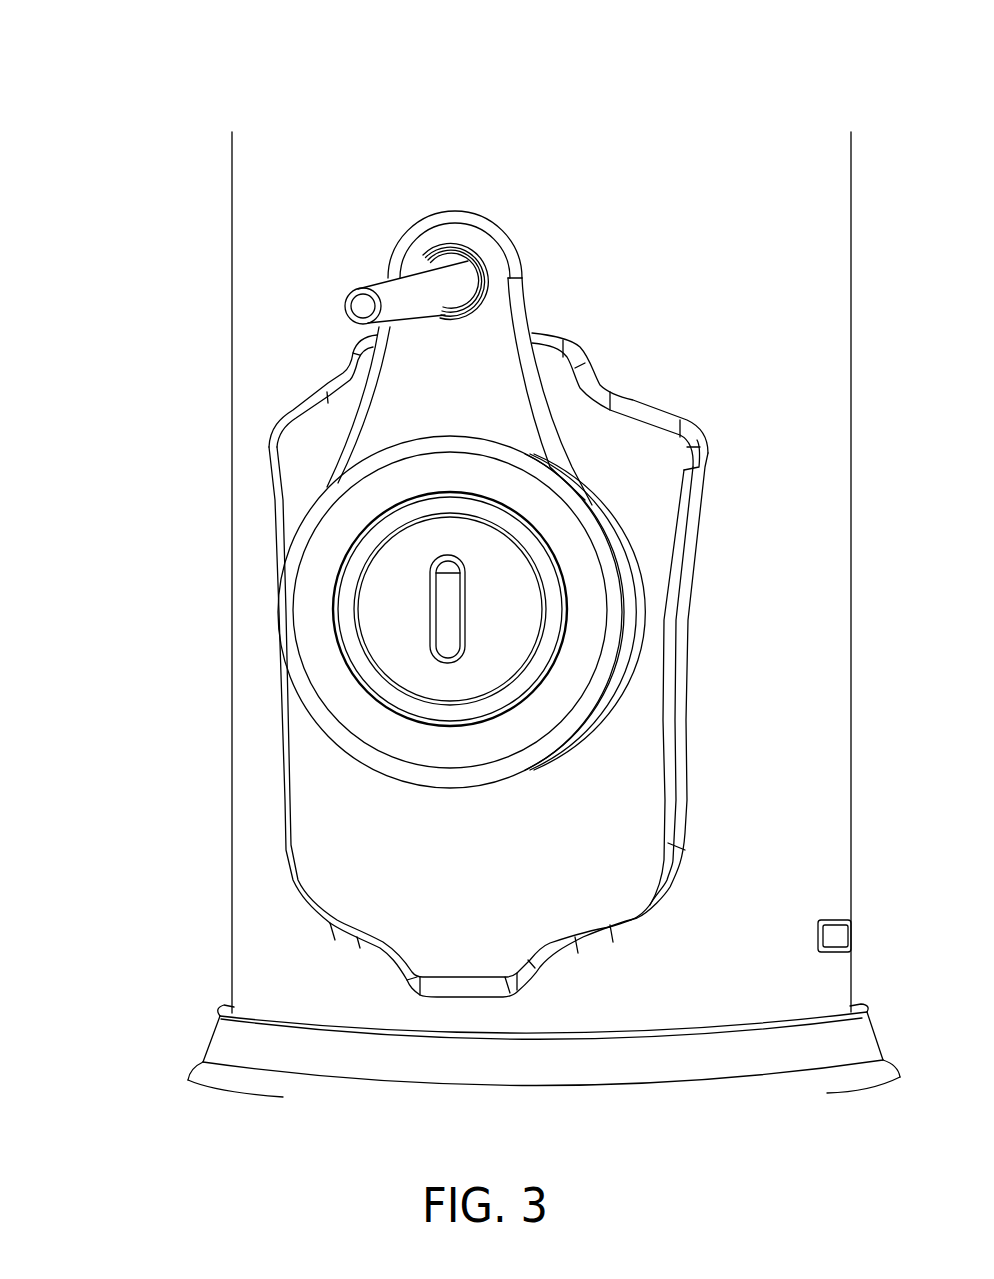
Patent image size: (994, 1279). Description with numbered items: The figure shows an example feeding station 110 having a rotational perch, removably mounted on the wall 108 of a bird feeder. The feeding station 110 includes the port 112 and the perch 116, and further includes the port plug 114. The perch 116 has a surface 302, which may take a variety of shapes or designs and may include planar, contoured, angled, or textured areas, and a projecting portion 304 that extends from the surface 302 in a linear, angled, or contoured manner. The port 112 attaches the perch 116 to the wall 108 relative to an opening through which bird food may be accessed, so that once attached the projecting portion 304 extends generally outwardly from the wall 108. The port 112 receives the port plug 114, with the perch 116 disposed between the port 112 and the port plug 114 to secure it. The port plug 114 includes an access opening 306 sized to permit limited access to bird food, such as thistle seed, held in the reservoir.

The wall 108 is at (232, 193).
The feeding station 110 is at (295, 72).
The port 112 is at (285, 805).
The port plug 114 is at (337, 612).
The perch 116 is at (330, 372).
The surface 302 is at (508, 407).
The projecting portion 304 is at (415, 313).
The access opening 306 is at (455, 595).